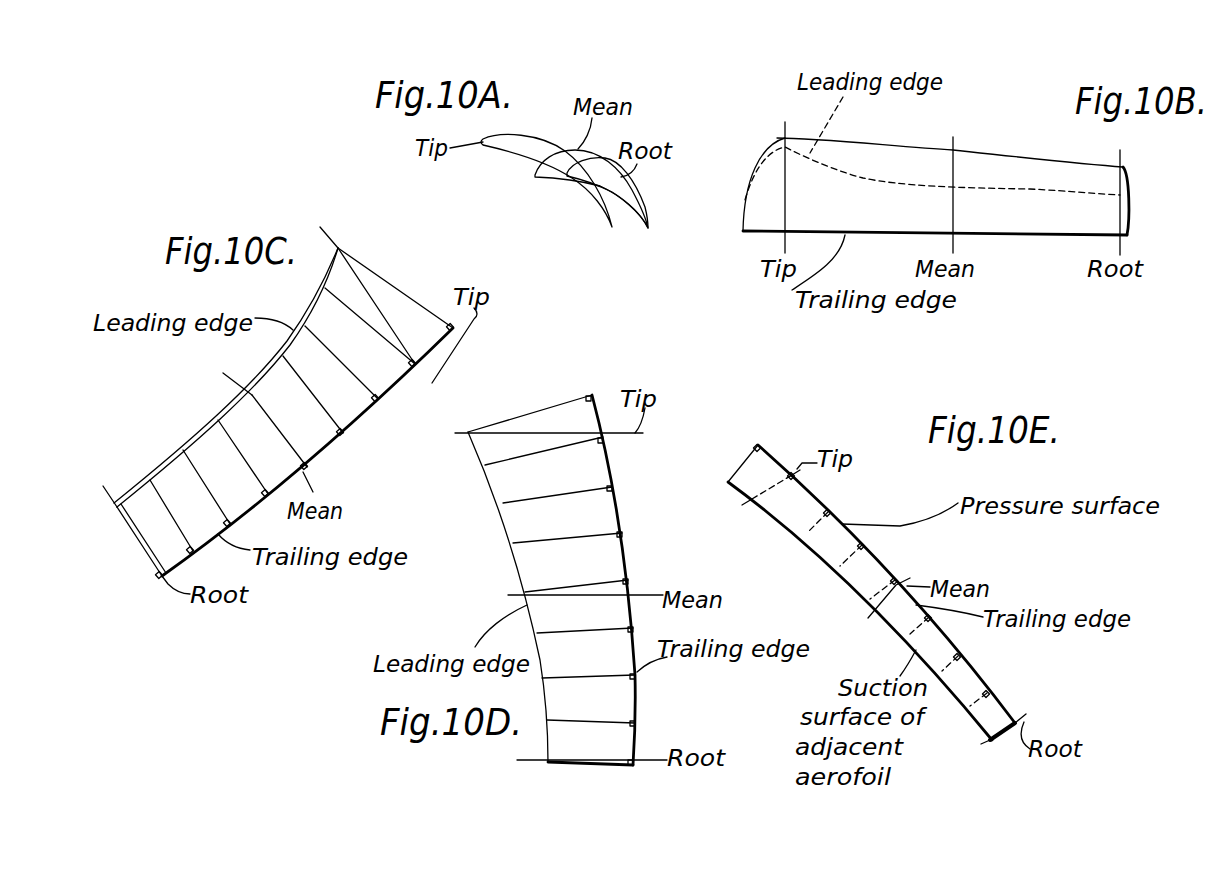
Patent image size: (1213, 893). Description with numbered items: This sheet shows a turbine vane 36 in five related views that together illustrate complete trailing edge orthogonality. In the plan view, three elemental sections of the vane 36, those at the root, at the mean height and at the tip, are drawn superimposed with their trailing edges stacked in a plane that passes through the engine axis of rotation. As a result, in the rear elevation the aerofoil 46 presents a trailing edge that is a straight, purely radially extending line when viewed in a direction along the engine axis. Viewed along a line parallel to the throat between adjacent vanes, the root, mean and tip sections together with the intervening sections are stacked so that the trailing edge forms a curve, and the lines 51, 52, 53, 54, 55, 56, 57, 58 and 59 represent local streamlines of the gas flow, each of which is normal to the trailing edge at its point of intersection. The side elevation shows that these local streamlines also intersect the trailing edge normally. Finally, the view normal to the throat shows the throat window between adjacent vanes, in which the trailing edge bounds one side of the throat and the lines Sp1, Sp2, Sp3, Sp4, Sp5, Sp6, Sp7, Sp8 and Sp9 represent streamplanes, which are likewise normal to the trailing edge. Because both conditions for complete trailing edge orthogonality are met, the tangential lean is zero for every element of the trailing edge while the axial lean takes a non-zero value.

In FIG. 10A, the vane 36 is at (634, 125).
In FIG. 10B, the aerofoil blade (side elevation) 46 is at (1023, 157).
In FIG. 10C, the local streamline 51 is at (388, 280).
In FIG. 10C, the local streamline 52 is at (345, 304).
In FIG. 10C, the local streamline 53 is at (350, 368).
In FIG. 10C, the local streamline 54 is at (316, 397).
In FIG. 10C, the local streamline 55 is at (288, 441).
In FIG. 10C, the local streamline 56 is at (232, 441).
In FIG. 10C, the local streamline 57 is at (211, 493).
In FIG. 10C, the local streamline 58 is at (176, 522).
In FIG. 10C, the local streamline 59 is at (140, 542).
In FIG. 10E, the streamplane Sp1 is at (748, 456).
In FIG. 10E, the streamplane Sp2 is at (776, 491).
In FIG. 10E, the streamplane Sp3 is at (817, 525).
In FIG. 10E, the streamplane Sp4 is at (856, 556).
In FIG. 10E, the streamplane Sp5 is at (910, 578).
In FIG. 10E, the streamplane Sp6 is at (913, 630).
In FIG. 10E, the streamplane Sp7 is at (940, 665).
In FIG. 10E, the streamplane Sp8 is at (972, 700).
In FIG. 10E, the streamplane Sp9 is at (1000, 741).